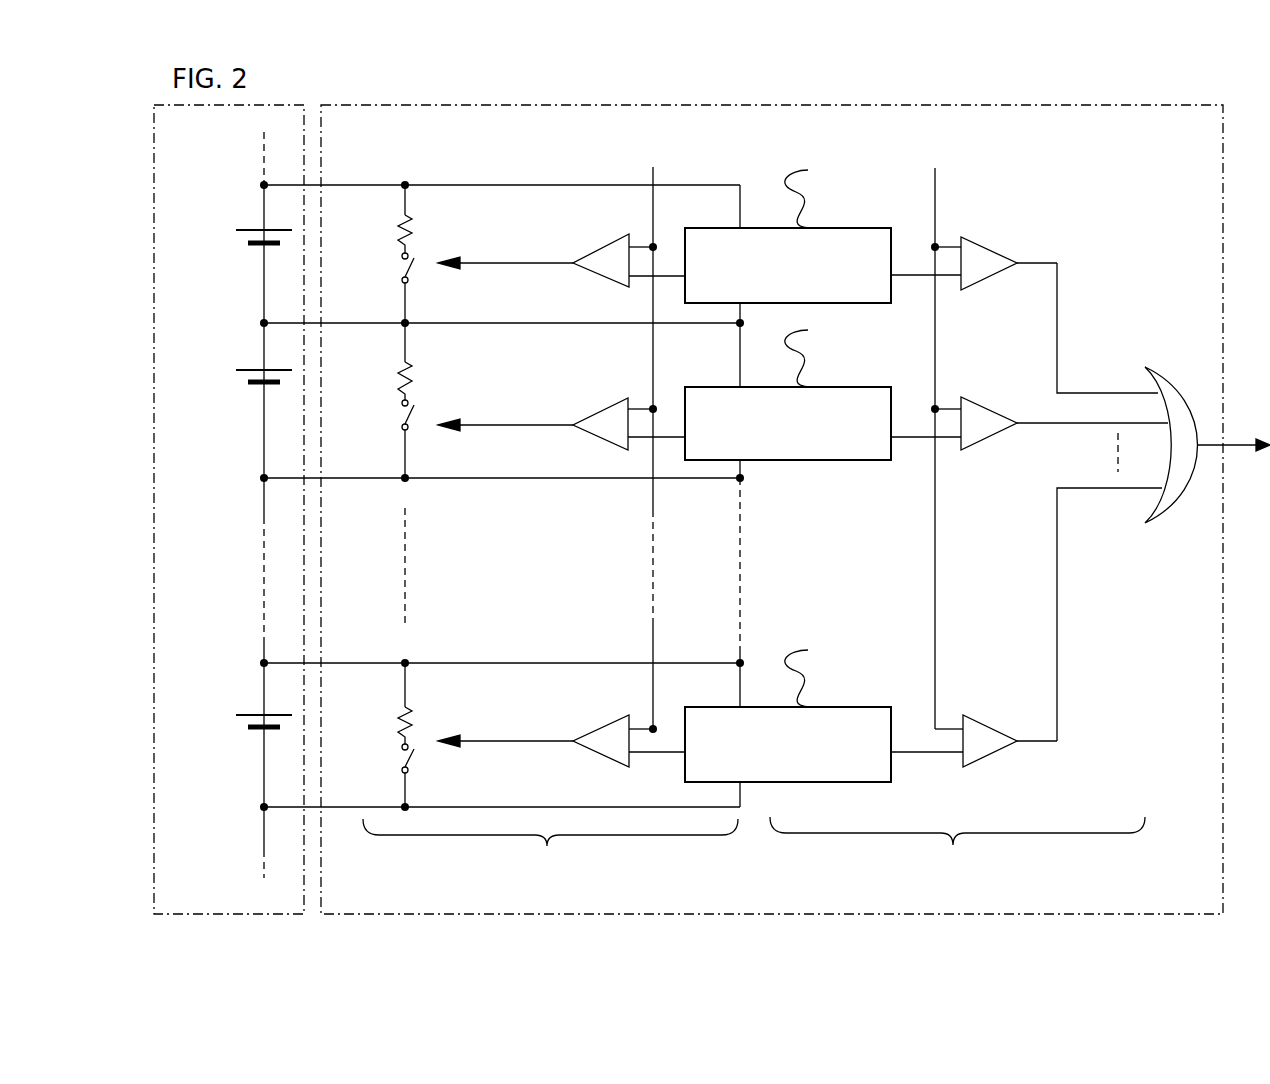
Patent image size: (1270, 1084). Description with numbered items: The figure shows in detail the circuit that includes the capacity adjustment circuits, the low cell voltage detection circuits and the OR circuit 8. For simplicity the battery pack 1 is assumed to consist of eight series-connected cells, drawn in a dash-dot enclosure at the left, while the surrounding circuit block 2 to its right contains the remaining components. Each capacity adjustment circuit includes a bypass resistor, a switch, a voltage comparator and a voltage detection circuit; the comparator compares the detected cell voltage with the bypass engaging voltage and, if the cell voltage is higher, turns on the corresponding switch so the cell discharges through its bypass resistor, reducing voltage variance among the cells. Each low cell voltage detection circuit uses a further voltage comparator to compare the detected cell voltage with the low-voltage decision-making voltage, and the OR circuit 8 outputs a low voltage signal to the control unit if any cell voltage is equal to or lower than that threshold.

The battery pack 1 is at (198, 915).
The capacity adjustment and low cell voltage detection circuit 2 is at (470, 915).
The OR circuit 8 is at (1174, 500).